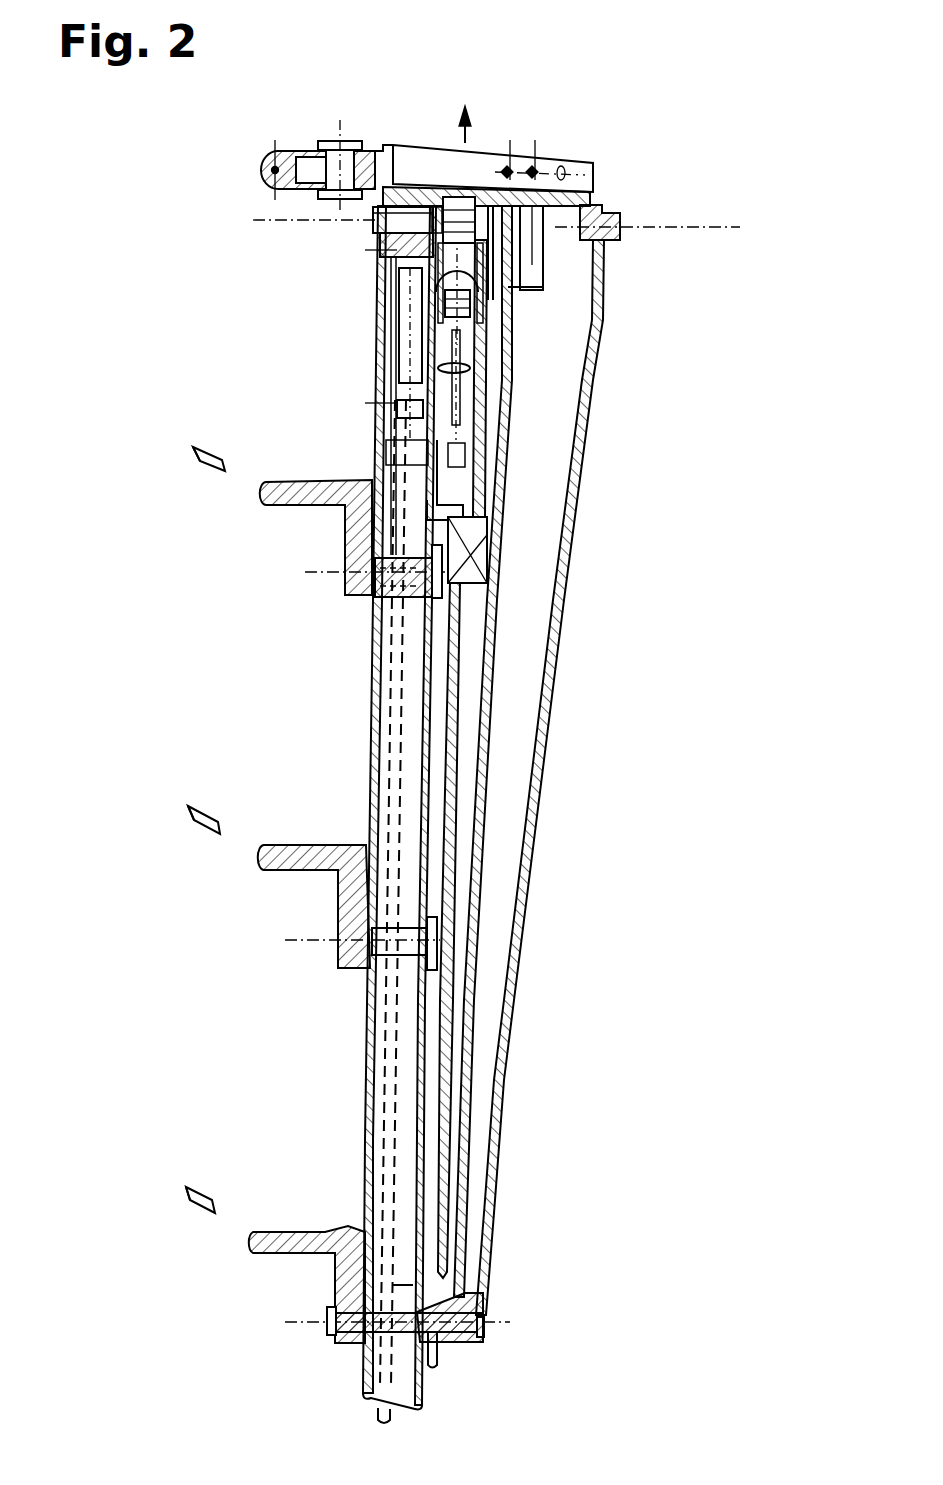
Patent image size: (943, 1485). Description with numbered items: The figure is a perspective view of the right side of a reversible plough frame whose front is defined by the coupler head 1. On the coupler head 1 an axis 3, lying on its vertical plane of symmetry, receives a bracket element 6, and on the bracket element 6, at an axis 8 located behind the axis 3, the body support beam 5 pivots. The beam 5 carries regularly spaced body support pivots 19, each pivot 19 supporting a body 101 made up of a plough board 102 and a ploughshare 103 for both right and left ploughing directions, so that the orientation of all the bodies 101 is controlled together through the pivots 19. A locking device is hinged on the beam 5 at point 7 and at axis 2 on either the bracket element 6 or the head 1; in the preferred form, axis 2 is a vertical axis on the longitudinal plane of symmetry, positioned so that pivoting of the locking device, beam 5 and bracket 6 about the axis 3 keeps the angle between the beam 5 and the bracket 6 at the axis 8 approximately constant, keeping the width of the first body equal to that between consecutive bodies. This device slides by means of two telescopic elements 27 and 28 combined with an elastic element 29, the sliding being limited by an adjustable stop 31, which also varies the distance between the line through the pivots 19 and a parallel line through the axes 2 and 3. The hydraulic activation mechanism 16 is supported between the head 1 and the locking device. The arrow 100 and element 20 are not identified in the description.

The direction of movement 100 is at (463, 109).
The coupler head 1 is at (592, 188).
The axis 2 is at (376, 226).
The axis 3 is at (562, 228).
The telescopic element 27 is at (380, 262).
The elastic element 29 is at (378, 320).
The hydraulic activation mechanism 16 is at (440, 320).
The adjustable stop 31 is at (470, 368).
The bracket element 6 is at (590, 312).
The hinge point 7 is at (455, 568).
The actuating bar 20 is at (458, 655).
The telescopic element 28 is at (382, 472).
The body support beam 5 is at (375, 1006).
The body 101 is at (272, 488).
The plough board 102 is at (205, 462).
The ploughshare 103 is at (203, 1009).
The body support pivot 19 is at (392, 591).
The axis 8 is at (355, 1343).